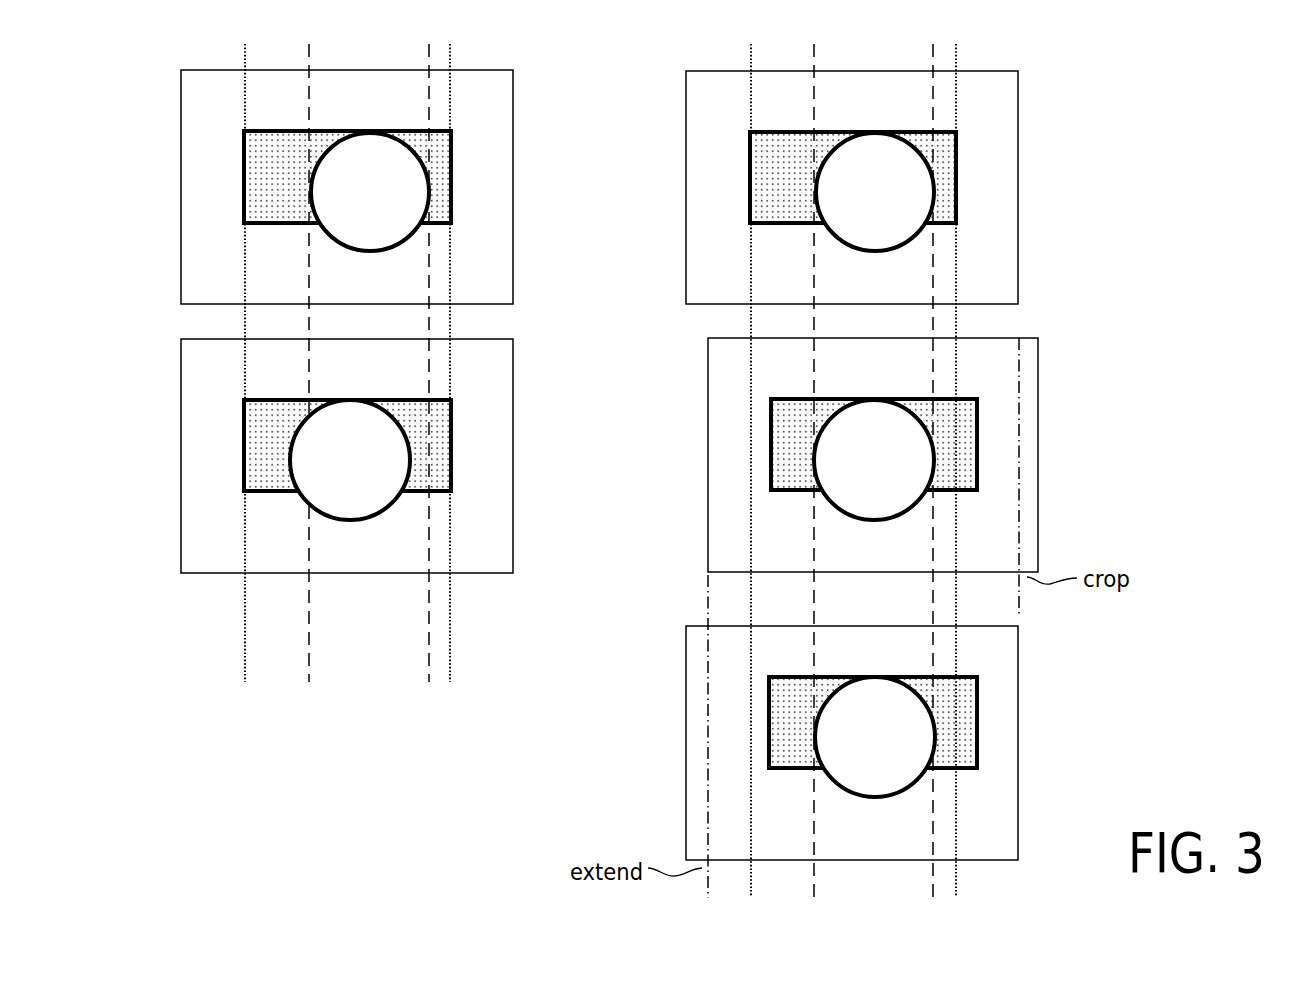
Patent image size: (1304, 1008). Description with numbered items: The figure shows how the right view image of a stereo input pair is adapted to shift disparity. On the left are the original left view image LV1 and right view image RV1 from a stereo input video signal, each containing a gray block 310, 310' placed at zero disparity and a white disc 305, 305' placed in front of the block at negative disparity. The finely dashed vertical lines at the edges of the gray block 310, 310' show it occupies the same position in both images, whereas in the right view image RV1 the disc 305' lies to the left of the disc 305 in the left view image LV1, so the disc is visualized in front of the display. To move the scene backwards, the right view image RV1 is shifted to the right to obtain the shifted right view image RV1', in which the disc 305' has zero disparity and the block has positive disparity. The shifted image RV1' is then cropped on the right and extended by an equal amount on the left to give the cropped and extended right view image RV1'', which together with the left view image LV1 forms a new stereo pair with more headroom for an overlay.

The white disc 305 is at (622, 216).
The gray block 310 is at (574, 177).
The white disc 305' is at (612, 622).
The gray block 310' is at (583, 584).
The left view image LV1 is at (181, 248).
The right view image RV1 is at (308, 456).
The shifted right view image RV1' is at (830, 455).
The cropped and extended right view image RV1'' is at (807, 743).